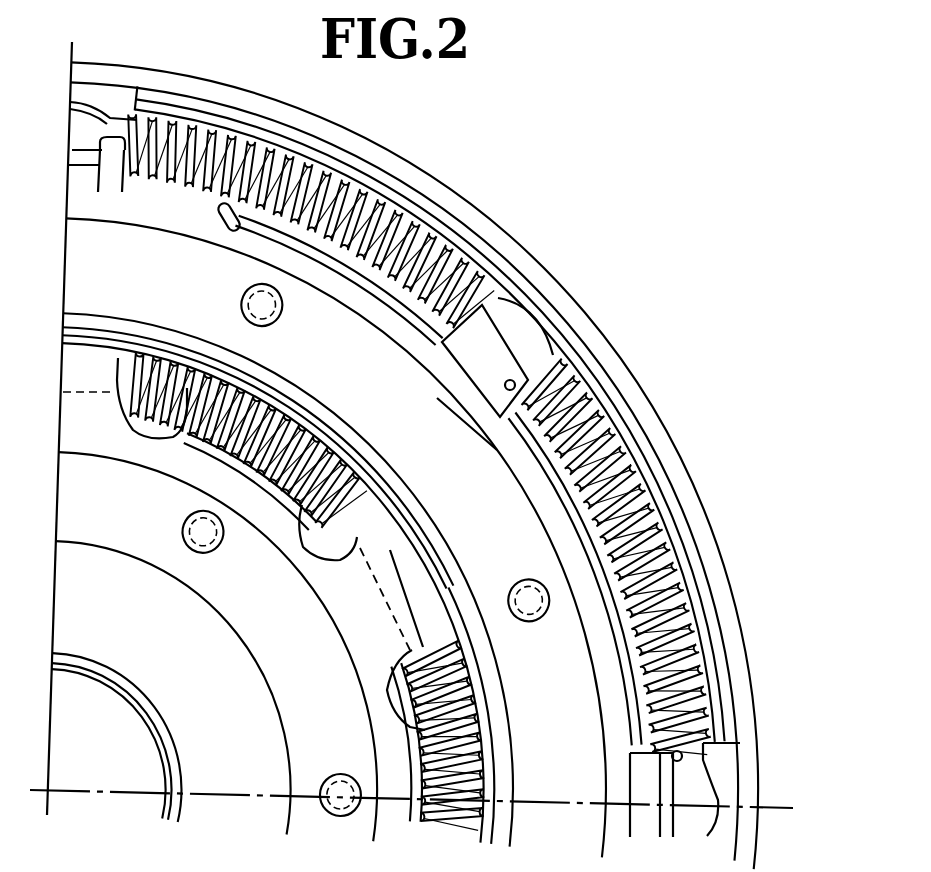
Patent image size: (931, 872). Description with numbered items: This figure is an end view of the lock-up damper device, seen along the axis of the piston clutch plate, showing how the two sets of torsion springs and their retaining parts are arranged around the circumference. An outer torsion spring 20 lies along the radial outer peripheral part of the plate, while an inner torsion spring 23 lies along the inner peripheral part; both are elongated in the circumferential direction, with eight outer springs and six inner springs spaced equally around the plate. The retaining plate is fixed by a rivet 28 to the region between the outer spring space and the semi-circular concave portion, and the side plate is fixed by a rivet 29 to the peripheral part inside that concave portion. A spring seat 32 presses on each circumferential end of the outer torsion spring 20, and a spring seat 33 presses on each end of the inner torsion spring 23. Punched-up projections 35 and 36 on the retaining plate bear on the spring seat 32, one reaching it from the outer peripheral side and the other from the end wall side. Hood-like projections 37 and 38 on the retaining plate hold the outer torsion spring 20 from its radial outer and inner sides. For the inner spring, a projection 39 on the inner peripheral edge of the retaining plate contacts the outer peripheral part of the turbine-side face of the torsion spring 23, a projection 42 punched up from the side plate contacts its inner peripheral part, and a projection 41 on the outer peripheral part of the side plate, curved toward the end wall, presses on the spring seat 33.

The outer torsion spring 20 is at (318, 172).
The inner torsion spring 23 is at (185, 365).
The rivet 28 is at (240, 290).
The rivet 29 is at (204, 545).
The spring seat 32 is at (113, 200).
The spring seat 33 is at (115, 367).
The projection 35 is at (540, 292).
The projection 36 is at (498, 398).
The hood-like projection 37 is at (436, 209).
The hood-like projection 38 is at (319, 258).
The projection 39 is at (302, 407).
The projection 41 is at (417, 594).
The projection 42 is at (213, 450).